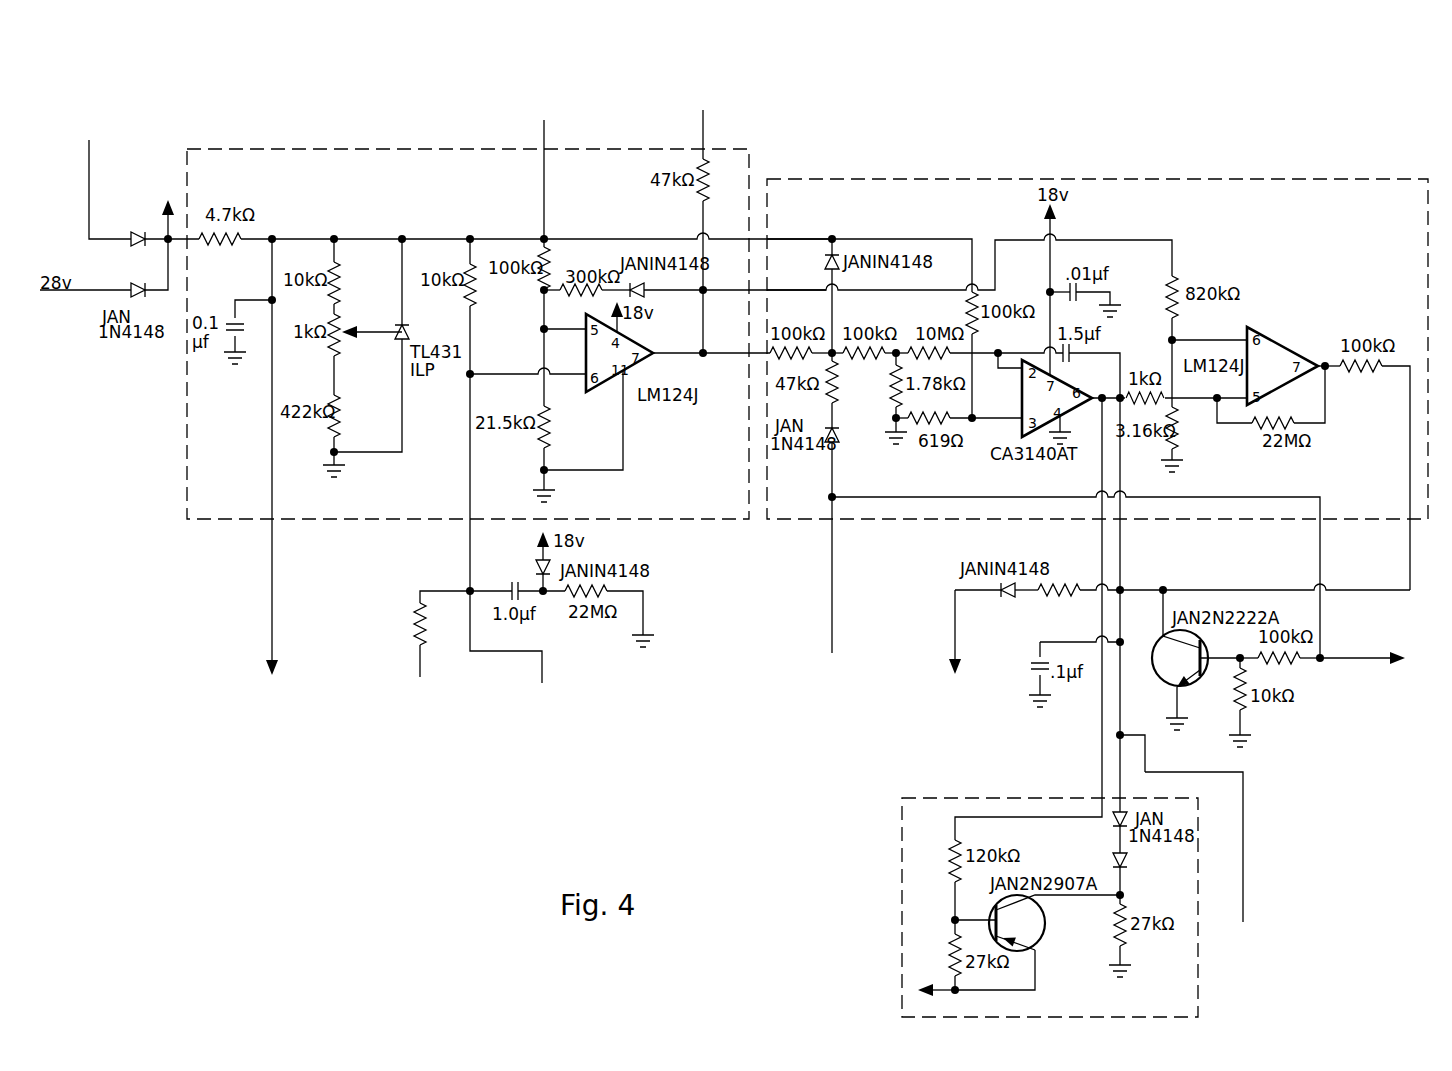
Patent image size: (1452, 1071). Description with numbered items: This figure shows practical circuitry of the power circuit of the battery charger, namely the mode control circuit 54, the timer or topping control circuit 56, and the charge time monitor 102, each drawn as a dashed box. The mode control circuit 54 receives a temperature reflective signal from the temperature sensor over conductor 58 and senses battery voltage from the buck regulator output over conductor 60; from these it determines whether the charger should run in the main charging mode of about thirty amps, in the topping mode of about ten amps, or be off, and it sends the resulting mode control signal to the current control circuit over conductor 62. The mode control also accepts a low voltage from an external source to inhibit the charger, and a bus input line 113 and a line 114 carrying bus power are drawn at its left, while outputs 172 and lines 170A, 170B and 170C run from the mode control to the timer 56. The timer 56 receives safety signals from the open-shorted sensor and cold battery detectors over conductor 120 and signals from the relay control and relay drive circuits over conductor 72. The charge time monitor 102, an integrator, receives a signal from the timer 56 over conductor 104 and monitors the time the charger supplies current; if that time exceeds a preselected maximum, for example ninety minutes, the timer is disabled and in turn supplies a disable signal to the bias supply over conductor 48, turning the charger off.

The bus input line 113 is at (89, 216).
The conductor 60 is at (547, 138).
The conductor 62 is at (703, 130).
The mode control circuit 54 is at (187, 488).
The conductor 114 is at (272, 590).
The conductor 58 is at (420, 660).
The output to safety and control circuit 172 is at (542, 662).
The control line A 170A is at (780, 239).
The control line B 170B is at (775, 291).
The control line C 170C is at (703, 353).
The timer or topping control circuit 56 is at (921, 520).
The conductor 120 is at (832, 606).
The conductor 48 is at (955, 617).
The conductor 72 is at (1386, 658).
The charge time monitor 102 is at (902, 827).
The conductor 104 is at (1120, 778).